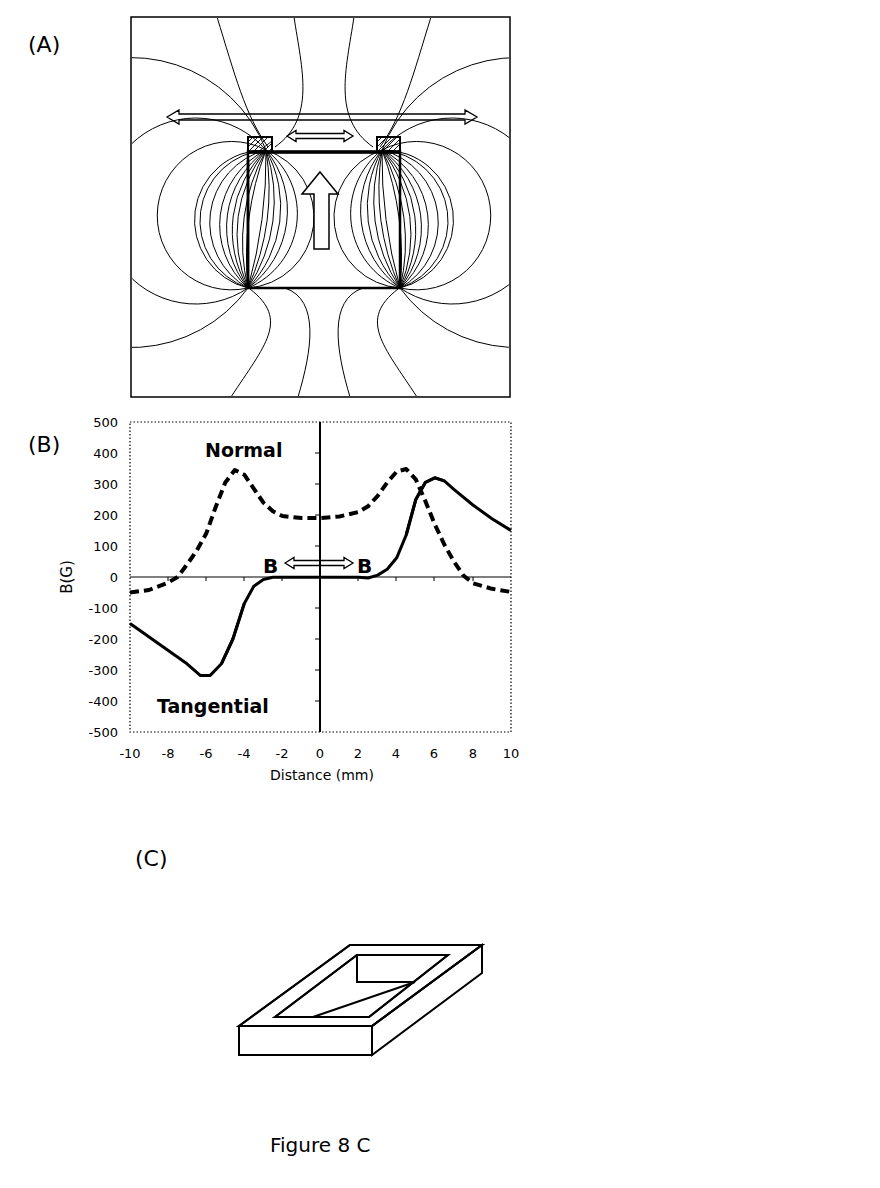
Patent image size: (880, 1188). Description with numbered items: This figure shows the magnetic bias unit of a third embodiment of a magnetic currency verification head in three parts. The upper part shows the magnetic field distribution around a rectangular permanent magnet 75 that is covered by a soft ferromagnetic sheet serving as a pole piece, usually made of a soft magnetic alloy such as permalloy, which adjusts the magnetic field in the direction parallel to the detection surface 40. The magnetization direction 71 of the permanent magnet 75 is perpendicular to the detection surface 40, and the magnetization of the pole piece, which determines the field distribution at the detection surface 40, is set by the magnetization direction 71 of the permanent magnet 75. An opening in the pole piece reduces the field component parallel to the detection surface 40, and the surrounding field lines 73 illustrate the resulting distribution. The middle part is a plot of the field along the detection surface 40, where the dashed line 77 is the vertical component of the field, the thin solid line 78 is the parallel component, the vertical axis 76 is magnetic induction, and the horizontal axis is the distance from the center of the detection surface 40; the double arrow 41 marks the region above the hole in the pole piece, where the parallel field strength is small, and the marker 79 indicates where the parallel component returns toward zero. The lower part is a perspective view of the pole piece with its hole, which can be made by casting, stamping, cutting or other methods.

The detection surface 40 is at (432, 117).
The gap width B-B between yoke portions 41 is at (325, 133).
The magnetization direction 71 is at (315, 239).
The magnetic field lines 73 is at (452, 354).
The permanent magnet 75 is at (250, 236).
The vertical axis 76 is at (319, 666).
The dashed line 77 is at (207, 527).
The thin solid line 78 is at (232, 636).
The tangential component zero crossing 79 is at (432, 578).